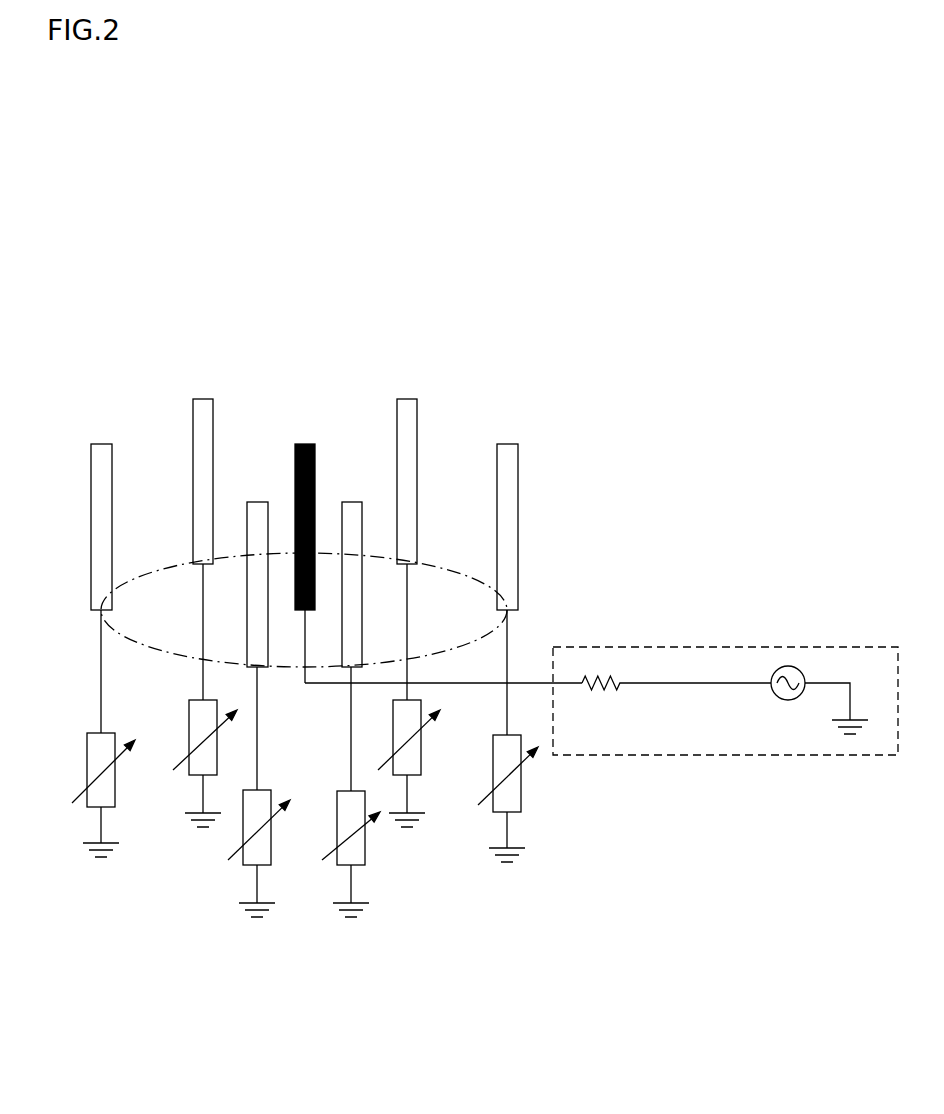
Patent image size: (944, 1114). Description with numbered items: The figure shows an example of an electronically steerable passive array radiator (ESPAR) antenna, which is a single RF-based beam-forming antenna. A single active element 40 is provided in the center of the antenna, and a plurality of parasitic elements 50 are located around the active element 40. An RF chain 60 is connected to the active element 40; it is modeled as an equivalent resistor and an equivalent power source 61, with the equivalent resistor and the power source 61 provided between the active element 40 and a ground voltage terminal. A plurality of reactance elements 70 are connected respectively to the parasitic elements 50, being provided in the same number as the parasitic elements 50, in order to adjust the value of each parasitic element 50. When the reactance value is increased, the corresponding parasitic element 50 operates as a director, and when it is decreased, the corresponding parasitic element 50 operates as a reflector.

The active element 40 is at (303, 444).
The parasitic elements 50 is at (507, 444).
The RF chain 60 is at (725, 668).
The equivalent power source 61 is at (788, 666).
The reactance elements 70 is at (522, 789).